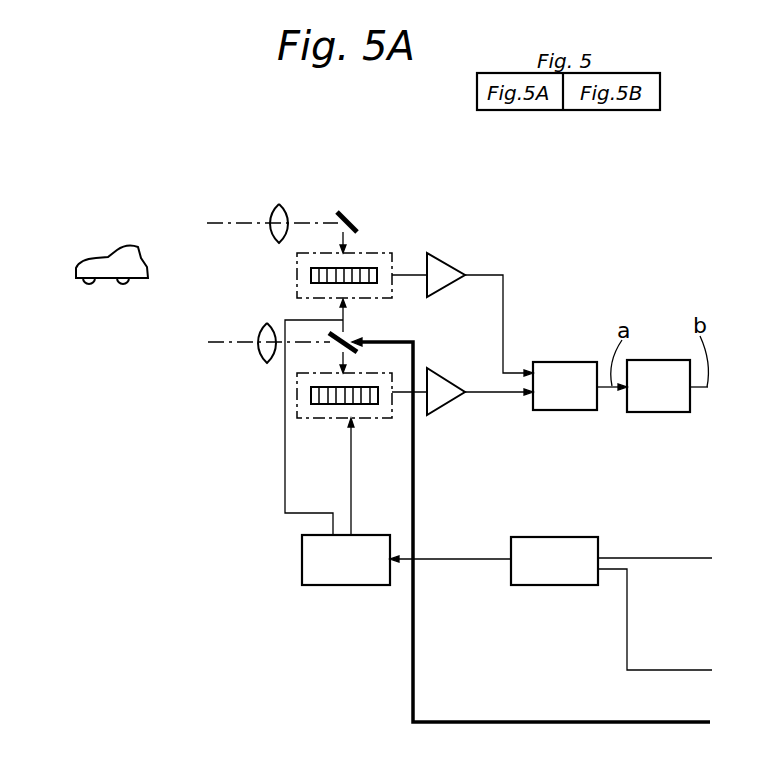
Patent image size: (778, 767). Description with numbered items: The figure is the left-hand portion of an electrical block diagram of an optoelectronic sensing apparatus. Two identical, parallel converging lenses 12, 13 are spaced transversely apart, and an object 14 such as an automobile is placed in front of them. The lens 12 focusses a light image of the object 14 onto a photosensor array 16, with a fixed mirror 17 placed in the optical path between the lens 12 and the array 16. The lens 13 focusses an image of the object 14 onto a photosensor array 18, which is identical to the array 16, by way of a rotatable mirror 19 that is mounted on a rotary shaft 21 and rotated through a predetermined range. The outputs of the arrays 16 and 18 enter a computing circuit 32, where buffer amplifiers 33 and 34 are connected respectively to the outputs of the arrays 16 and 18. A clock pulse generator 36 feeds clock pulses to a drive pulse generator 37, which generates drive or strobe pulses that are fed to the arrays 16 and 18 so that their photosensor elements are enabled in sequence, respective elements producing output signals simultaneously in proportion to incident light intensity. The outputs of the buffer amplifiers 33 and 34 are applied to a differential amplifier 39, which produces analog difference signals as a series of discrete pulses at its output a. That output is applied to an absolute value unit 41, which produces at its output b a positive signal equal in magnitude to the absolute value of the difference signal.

The converging lens 12 is at (278, 204).
The converging lens 13 is at (268, 323).
The object 14 is at (113, 257).
The photosensor array 16 is at (367, 267).
The fixed mirror 17 is at (346, 211).
The photosensor array 18 is at (322, 406).
The rotatable mirror 19 is at (338, 332).
The rotary shaft 21 is at (350, 333).
The computing circuit 32 is at (570, 319).
The buffer amplifier 33 is at (447, 262).
The buffer amplifier 34 is at (446, 382).
The clock pulse generator 36 is at (553, 586).
The drive pulse generator 37 is at (342, 586).
The differential amplifier 39 is at (560, 411).
The absolute value unit 41 is at (647, 413).